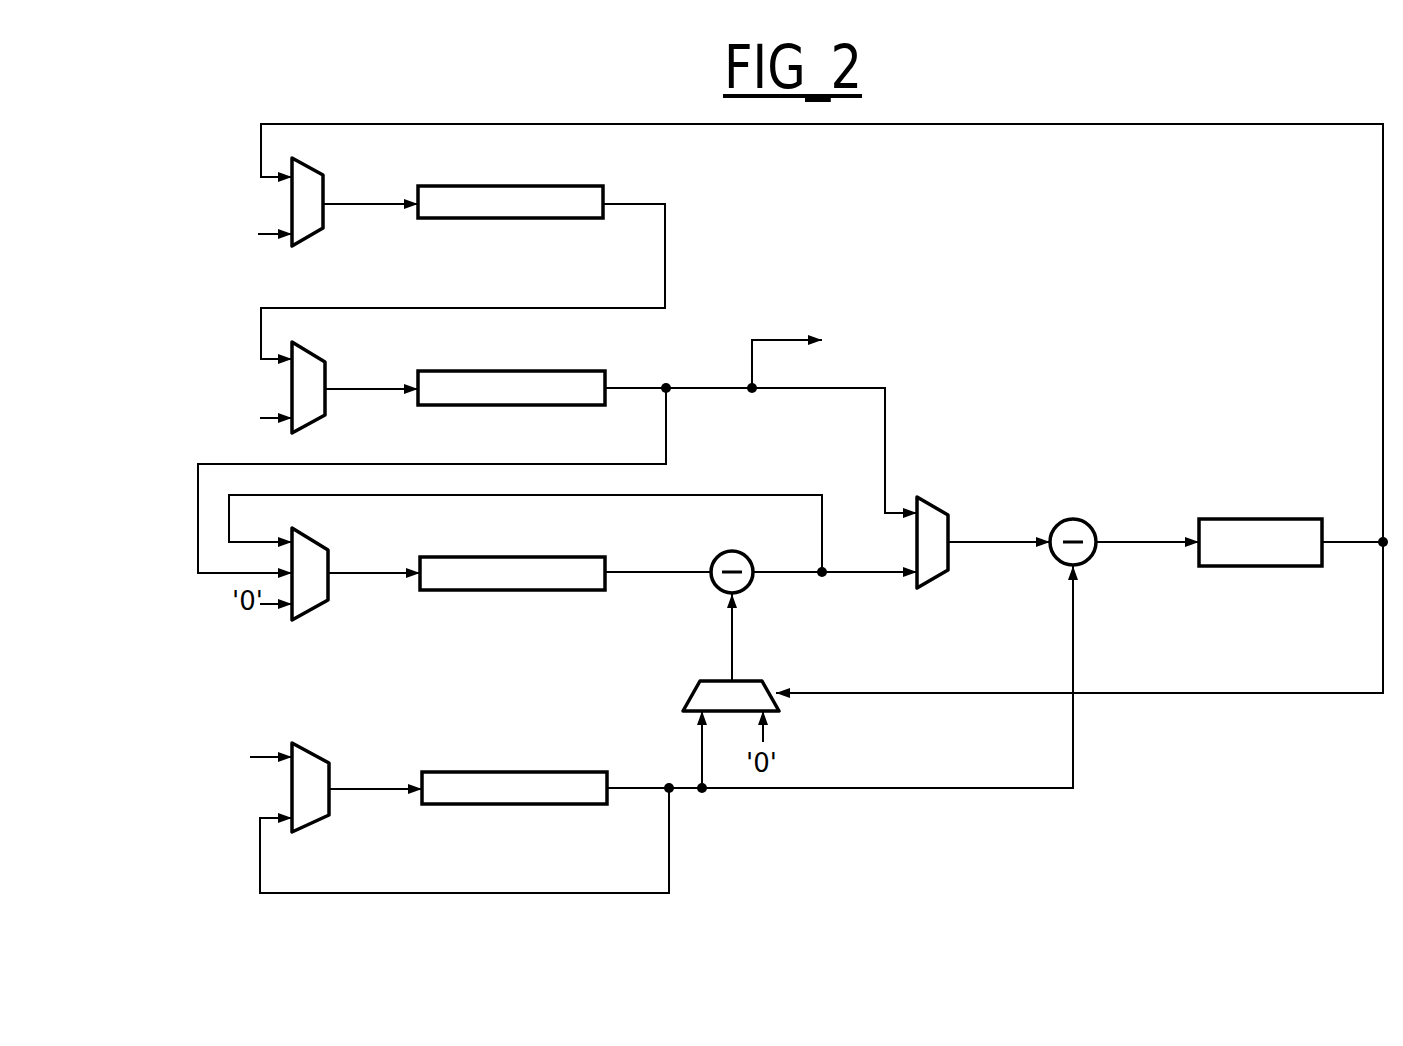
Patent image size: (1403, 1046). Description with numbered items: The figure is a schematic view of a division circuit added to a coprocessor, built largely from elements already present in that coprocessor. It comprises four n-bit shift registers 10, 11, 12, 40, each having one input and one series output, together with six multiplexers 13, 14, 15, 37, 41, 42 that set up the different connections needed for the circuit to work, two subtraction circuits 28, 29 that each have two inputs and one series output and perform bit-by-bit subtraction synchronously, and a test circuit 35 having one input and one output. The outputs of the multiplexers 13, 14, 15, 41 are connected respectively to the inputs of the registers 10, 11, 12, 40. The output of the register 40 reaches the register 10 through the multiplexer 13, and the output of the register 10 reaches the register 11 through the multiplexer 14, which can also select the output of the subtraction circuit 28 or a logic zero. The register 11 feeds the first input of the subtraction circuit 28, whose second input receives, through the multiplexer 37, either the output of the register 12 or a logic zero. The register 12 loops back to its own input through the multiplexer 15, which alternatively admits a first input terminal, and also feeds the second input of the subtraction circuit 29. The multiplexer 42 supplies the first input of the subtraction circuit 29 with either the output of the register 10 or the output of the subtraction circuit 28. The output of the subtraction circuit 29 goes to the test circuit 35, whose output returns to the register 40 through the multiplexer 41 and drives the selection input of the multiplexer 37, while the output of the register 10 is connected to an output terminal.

The n-bit shift register 10 is at (517, 371).
The n-bit shift register 11 is at (518, 557).
The n-bit shift register 12 is at (512, 772).
The multiplexer 13 is at (313, 350).
The multiplexer 14 is at (313, 538).
The multiplexer 15 is at (312, 753).
The subtraction circuit 28 is at (752, 583).
The subtraction circuit 29 is at (1072, 520).
The test circuit 35 is at (1255, 519).
The multiplexer 37 is at (767, 682).
The n-bit shift register 40 is at (512, 186).
The multiplexer 41 is at (315, 165).
The multiplexer 42 is at (933, 502).